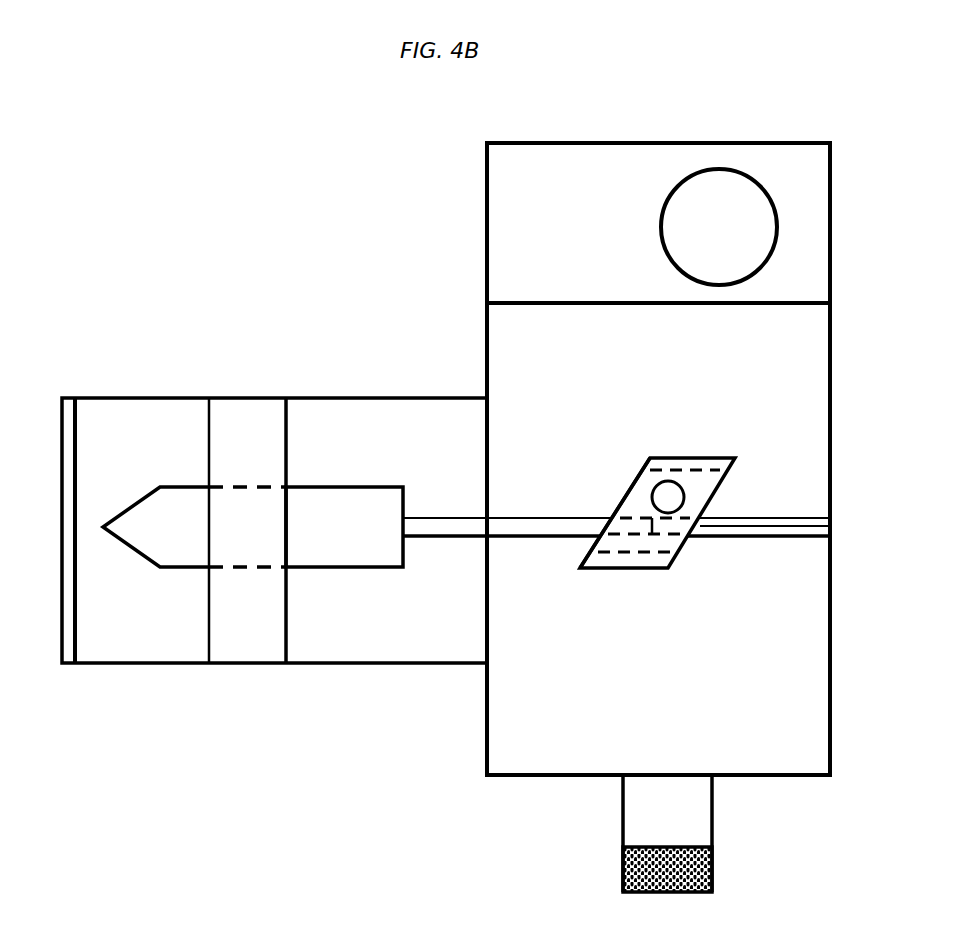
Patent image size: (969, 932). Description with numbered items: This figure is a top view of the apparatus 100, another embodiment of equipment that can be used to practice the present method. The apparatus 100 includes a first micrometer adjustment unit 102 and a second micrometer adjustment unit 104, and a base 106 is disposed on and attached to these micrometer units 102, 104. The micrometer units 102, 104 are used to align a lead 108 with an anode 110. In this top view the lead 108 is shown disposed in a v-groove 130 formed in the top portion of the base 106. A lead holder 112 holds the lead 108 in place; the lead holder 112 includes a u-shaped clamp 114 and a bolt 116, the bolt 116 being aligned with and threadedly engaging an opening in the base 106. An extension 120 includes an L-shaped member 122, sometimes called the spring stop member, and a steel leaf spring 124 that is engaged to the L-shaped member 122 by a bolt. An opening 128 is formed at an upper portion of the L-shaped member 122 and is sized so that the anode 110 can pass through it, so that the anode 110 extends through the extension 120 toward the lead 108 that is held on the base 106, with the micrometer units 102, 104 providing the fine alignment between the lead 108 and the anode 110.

The apparatus 100 is at (258, 168).
The first micrometer adjustment unit 102 is at (663, 200).
The second micrometer adjustment unit 104 is at (712, 867).
The base 106 is at (705, 361).
The lead 108 is at (448, 540).
The anode 110 is at (168, 487).
The lead holder 112 is at (722, 495).
The u-shaped clamp 114 is at (618, 500).
The bolt 116 is at (676, 480).
The extension 120 is at (392, 668).
The L-shaped member 122 is at (236, 668).
The steel leaf spring 124 is at (54, 655).
The opening 128 is at (246, 482).
The v-groove 130 is at (735, 540).